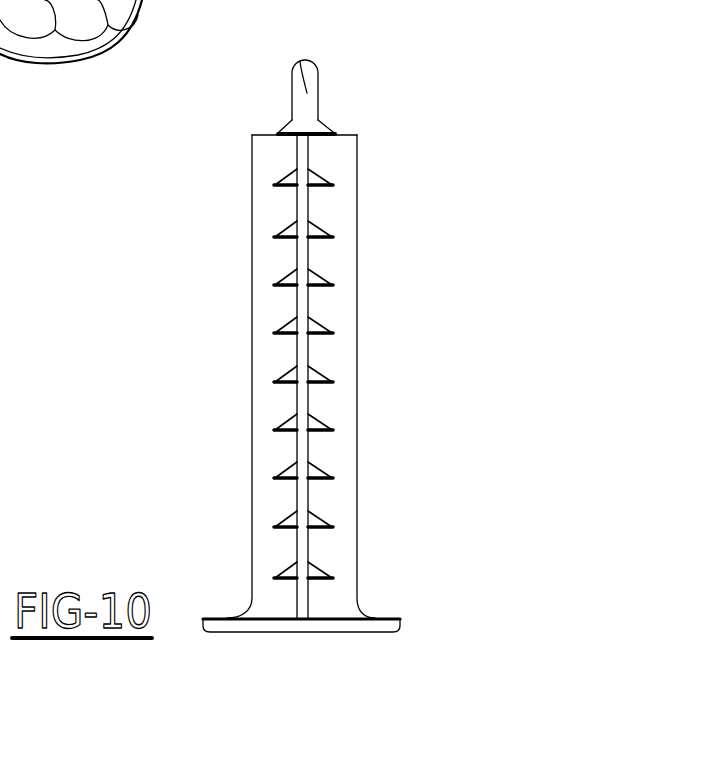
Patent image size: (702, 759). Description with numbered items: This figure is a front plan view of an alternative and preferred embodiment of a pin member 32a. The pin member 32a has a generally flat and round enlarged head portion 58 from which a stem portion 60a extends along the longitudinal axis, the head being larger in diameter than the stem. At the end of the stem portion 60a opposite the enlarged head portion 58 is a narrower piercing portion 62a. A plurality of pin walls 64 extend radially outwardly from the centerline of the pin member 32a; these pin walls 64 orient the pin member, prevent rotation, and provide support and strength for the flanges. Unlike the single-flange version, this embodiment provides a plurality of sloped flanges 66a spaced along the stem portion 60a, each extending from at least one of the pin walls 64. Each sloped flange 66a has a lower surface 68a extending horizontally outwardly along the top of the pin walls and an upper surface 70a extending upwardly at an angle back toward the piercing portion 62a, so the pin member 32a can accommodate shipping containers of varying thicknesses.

The pin member 32a is at (420, 200).
The enlarged head portion 58 is at (116, 16).
The stem portion 60a is at (319, 83).
The piercing portion 62a is at (300, 62).
The pin walls 64 is at (270, 405).
The sloped flanges 66a is at (330, 128).
The lower surface 68a is at (293, 140).
The upper surface 70a is at (290, 128).